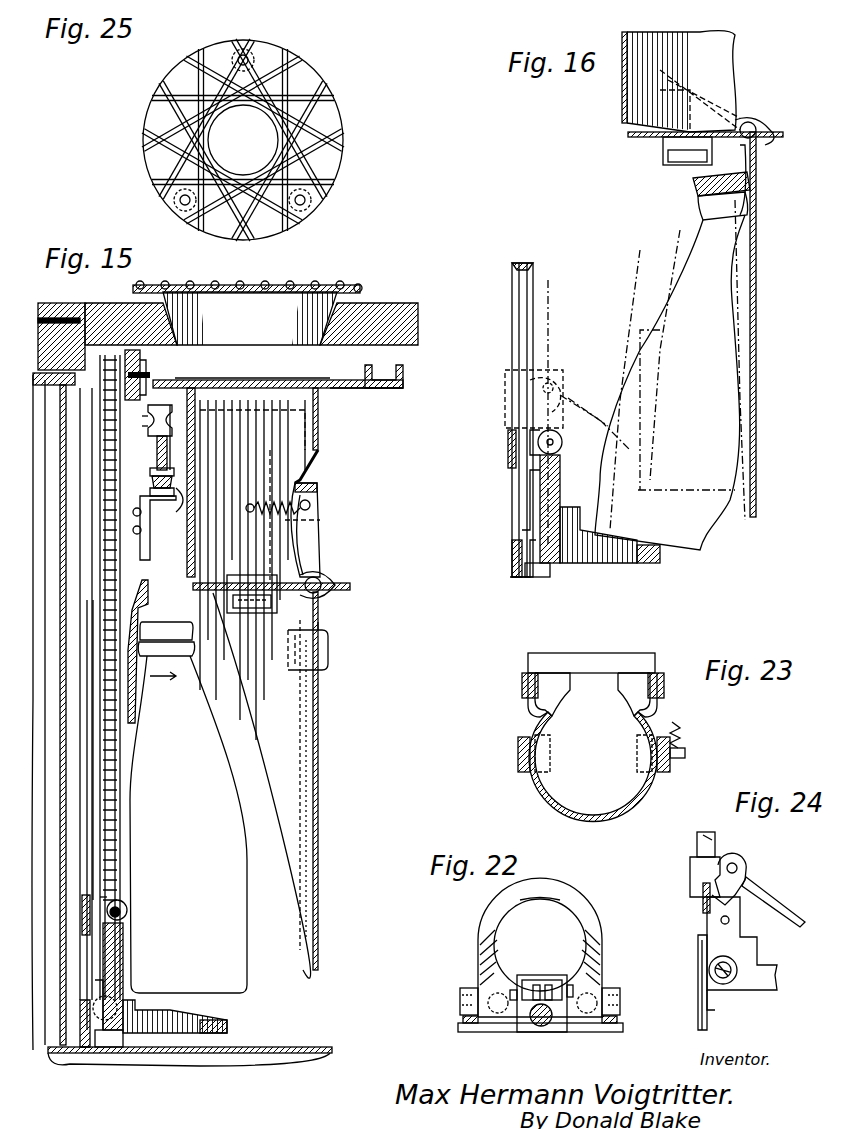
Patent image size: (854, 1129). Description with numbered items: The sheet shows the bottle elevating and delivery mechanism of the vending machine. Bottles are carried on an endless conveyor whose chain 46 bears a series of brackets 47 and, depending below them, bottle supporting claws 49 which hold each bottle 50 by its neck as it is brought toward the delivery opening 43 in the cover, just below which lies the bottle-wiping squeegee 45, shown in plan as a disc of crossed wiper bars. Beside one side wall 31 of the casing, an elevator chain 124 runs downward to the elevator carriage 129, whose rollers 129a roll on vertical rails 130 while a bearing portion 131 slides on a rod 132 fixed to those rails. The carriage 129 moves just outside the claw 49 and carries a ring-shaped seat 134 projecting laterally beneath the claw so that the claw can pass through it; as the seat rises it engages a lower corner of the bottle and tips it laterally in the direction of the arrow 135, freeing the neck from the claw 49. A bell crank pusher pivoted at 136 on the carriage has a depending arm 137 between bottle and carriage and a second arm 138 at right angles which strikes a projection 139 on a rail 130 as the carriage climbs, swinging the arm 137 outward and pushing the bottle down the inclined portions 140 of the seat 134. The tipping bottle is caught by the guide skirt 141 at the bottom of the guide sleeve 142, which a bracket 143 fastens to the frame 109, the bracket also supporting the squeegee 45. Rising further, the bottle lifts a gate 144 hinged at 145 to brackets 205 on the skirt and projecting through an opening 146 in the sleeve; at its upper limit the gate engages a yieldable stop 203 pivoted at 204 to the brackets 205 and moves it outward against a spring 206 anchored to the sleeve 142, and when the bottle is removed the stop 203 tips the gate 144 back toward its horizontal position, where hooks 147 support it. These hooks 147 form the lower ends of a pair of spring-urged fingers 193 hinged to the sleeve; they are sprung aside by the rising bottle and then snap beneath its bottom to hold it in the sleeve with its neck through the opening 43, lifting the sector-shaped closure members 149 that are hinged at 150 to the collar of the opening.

In FIG. 15, the side wall 31 is at (60, 770).
In FIG. 15, the delivery opening 43 is at (228, 331).
In FIG. 25, the squeegee 45 is at (262, 46).
In FIG. 15, the squeegee 45 is at (278, 380).
In FIG. 15, the chain 46 is at (158, 514).
In FIG. 15, the bracket 47 is at (157, 453).
In FIG. 15, the bottle supporting claw 49 is at (146, 594).
In FIG. 15, the bottle 50 is at (188, 807).
In FIG. 16, the bottle 50 is at (672, 361).
In FIG. 15, the frame 109 is at (403, 372).
In FIG. 15, the elevator chain 124 is at (118, 828).
In FIG. 15, the elevator carriage 129 is at (118, 1043).
In FIG. 16, the elevator carriage 129 is at (571, 571).
In FIG. 22, the elevator carriage 129 is at (505, 1015).
In FIG. 24, the elevator carriage 129 is at (748, 995).
In FIG. 15, the rollers 129a is at (93, 1040).
In FIG. 22, the rollers 129a is at (468, 988).
In FIG. 22, the vertical rails 130 is at (463, 1020).
In FIG. 15, the bearing portion 131 is at (123, 927).
In FIG. 22, the bearing portion 131 is at (545, 1027).
In FIG. 15, the rod 132 is at (95, 874).
In FIG. 16, the rod 132 is at (522, 262).
In FIG. 22, the rod 132 is at (537, 1027).
In FIG. 15, the seat 134 is at (222, 1036).
In FIG. 16, the seat 134 is at (655, 565).
In FIG. 22, the seat 134 is at (533, 900).
In FIG. 15, the arrow 135 is at (164, 685).
In FIG. 16, the pivot 136 is at (562, 395).
In FIG. 22, the pivot 136 is at (572, 990).
In FIG. 24, the pivot 136 is at (737, 862).
In FIG. 15, the arm 137 is at (126, 963).
In FIG. 16, the arm 137 is at (562, 470).
In FIG. 22, the arm 137 is at (556, 963).
In FIG. 24, the arm 137 is at (805, 885).
In FIG. 16, the arm 138 is at (520, 412).
In FIG. 22, the arm 138 is at (570, 1020).
In FIG. 24, the arm 138 is at (720, 878).
In FIG. 24, the projection 139 is at (703, 903).
In FIG. 15, the inclined portions 140 is at (175, 1016).
In FIG. 16, the inclined portions 140 is at (618, 565).
In FIG. 22, the inclined portions 140 is at (478, 956).
In FIG. 15, the guide skirt 141 is at (318, 755).
In FIG. 16, the guide skirt 141 is at (757, 315).
In FIG. 23, the guide skirt 141 is at (540, 780).
In FIG. 15, the guide sleeve 142 is at (320, 453).
In FIG. 16, the guide sleeve 142 is at (622, 98).
In FIG. 15, the bracket 143 is at (368, 390).
In FIG. 15, the gate 144 is at (300, 570).
In FIG. 16, the gate 144 is at (630, 138).
In FIG. 23, the gate 144 is at (593, 757).
In FIG. 15, the hinge 145 is at (335, 586).
In FIG. 16, the hinge 145 is at (752, 124).
In FIG. 23, the hinge 145 is at (522, 688).
In FIG. 15, the opening 146 is at (305, 542).
In FIG. 16, the opening 146 is at (730, 68).
In FIG. 23, the hooks 147 is at (662, 775).
In FIG. 15, the closure members 149 is at (340, 290).
In FIG. 15, the hinge 150 is at (372, 282).
In FIG. 23, the fingers 193 is at (518, 752).
In FIG. 15, the yieldable stop 203 is at (318, 500).
In FIG. 15, the pivot 204 is at (330, 633).
In FIG. 23, the brackets 205 is at (530, 711).
In FIG. 15, the spring 206 is at (322, 521).